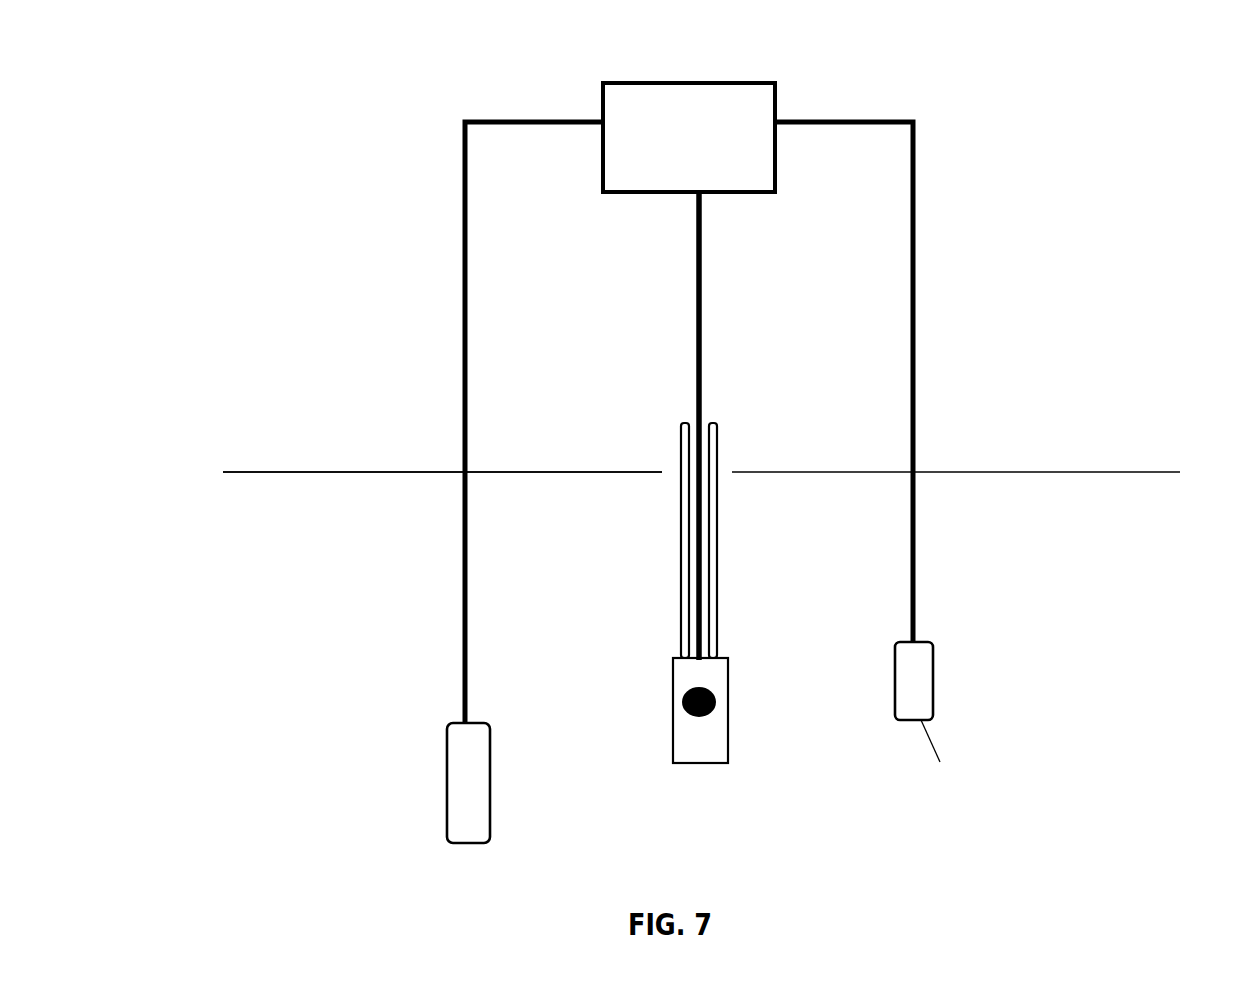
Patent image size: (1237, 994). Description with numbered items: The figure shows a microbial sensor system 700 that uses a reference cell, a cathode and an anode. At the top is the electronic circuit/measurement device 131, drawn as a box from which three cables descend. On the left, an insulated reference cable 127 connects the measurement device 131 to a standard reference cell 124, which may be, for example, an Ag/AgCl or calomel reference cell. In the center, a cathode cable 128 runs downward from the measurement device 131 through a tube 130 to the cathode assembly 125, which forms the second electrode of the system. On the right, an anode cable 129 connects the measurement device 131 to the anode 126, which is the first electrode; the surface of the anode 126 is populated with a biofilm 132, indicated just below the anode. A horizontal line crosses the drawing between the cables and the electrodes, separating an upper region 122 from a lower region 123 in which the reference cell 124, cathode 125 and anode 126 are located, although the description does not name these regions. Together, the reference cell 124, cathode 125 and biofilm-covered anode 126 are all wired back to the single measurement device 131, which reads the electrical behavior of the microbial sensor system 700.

The sensor system 700 is at (1023, 80).
The air / above-surface region 122 is at (701, 457).
The water / below-surface region 123 is at (442, 487).
The standard reference cell 124 is at (484, 808).
The cathode 125 is at (723, 742).
The anode 126 is at (930, 697).
The insulated reference cable 127 is at (466, 333).
The cathode cable 128 is at (699, 333).
The anode cable 129 is at (914, 333).
The tube 130 is at (715, 621).
The electronic circuit/measurement device 131 is at (684, 82).
The biofilm 132 is at (944, 754).